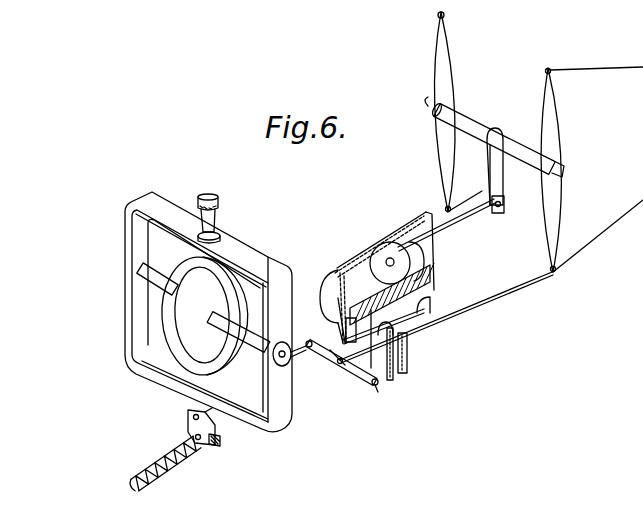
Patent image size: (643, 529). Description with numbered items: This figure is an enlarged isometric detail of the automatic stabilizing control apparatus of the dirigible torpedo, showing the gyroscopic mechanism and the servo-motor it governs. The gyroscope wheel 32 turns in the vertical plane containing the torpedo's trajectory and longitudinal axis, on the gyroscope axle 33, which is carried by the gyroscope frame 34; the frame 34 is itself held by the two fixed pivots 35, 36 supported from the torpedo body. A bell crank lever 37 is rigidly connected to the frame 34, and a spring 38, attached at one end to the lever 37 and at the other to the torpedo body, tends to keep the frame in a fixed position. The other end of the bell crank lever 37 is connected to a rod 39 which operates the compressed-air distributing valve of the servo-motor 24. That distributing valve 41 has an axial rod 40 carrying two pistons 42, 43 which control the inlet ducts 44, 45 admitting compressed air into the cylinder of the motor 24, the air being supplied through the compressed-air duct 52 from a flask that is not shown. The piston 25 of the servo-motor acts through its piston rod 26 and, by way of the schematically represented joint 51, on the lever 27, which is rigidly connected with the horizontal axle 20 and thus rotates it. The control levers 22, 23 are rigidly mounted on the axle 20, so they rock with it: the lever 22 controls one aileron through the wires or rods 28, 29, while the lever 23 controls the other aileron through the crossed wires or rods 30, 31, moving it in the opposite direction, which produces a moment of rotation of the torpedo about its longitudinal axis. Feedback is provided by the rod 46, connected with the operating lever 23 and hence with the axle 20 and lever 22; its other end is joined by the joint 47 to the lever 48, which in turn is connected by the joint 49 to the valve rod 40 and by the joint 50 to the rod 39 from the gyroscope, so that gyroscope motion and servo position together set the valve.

The horizontal axle 20 is at (479, 123).
The control lever 22 is at (448, 72).
The control lever 23 is at (559, 137).
The compressed-air servo-motor 24 is at (362, 262).
The piston 25 is at (393, 244).
The piston rod 26 is at (459, 224).
The lever 27 is at (503, 184).
The wire or rod 28 is at (450, 12).
The wire or rod 29 is at (468, 200).
The crossed wire or rod 30 is at (603, 70).
The crossed wire or rod 31 is at (589, 245).
The gyroscope wheel 32 is at (201, 315).
The gyroscope axle 33 is at (170, 286).
The gyroscope frame 34 is at (267, 259).
The fixed pivot 35 is at (217, 214).
The fixed pivot 36 is at (218, 441).
The bell crank lever 37 is at (192, 425).
The spring 38 is at (181, 462).
The rod 39 is at (252, 386).
The axial rod 40 is at (352, 375).
The distributing valve 41 is at (422, 314).
The valve piston 42 is at (378, 384).
The valve piston 43 is at (408, 340).
The inlet duct 44 is at (345, 331).
The inlet duct 45 is at (434, 283).
The rod 46 is at (490, 302).
The joint 47 is at (376, 392).
The lever 48 is at (337, 362).
The joint 49 is at (333, 370).
The joint 50 is at (297, 359).
The joint 51 is at (499, 214).
The compressed-air duct 52 is at (405, 373).